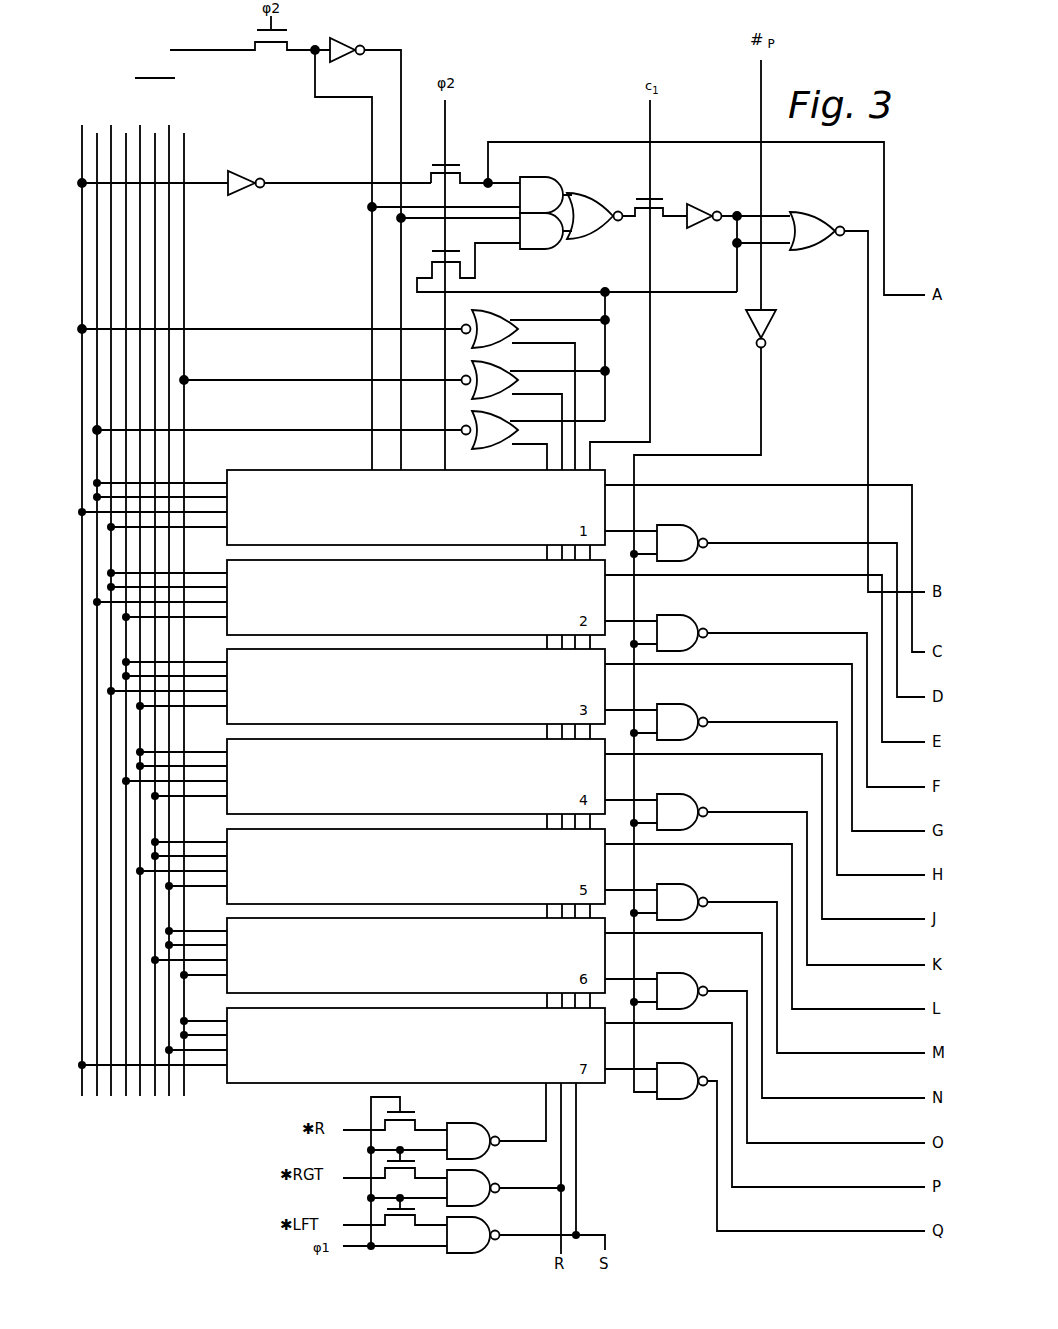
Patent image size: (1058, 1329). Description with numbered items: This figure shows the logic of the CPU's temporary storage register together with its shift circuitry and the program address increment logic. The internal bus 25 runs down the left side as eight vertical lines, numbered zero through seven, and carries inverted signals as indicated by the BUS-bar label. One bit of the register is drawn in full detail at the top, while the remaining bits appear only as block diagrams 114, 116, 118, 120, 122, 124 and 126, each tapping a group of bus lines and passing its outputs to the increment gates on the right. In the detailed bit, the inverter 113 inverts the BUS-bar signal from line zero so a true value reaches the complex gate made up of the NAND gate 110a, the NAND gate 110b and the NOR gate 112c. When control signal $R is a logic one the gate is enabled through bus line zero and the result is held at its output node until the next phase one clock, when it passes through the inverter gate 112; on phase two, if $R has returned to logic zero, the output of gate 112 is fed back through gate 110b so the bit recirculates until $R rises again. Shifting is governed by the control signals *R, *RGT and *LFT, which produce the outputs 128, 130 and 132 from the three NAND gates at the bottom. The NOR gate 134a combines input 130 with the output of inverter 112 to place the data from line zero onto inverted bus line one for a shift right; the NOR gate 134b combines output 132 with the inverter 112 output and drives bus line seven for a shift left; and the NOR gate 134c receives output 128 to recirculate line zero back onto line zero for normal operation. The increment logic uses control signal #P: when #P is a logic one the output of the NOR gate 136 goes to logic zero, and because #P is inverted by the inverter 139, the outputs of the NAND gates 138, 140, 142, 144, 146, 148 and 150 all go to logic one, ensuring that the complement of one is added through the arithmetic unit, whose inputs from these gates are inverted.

The internal bus 25 is at (233, 276).
The NAND gate 110a is at (531, 182).
The NAND gate 110b is at (546, 246).
The inverter gate 112 is at (697, 206).
The NOR gate 112c is at (580, 205).
The inverter 113 is at (243, 172).
The storage register bit 114 is at (290, 519).
The storage register bit 116 is at (290, 609).
The storage register bit 118 is at (290, 698).
The storage register bit 120 is at (290, 788).
The storage register bit 122 is at (290, 878).
The storage register bit 124 is at (290, 967).
The storage register bit 126 is at (290, 1057).
The output of *R gate 128 is at (482, 1138).
The control signal 130 is at (481, 1186).
The output of *LFT gate 132 is at (479, 1232).
The NOR gate 134a is at (491, 424).
The NOR gate 134b is at (500, 376).
The NOR gate 134c is at (500, 318).
The NOR gate 136 is at (805, 213).
The NAND gate 138 is at (682, 543).
The inverter 139 is at (769, 323).
The NAND gate 140 is at (682, 633).
The NAND gate 142 is at (682, 722).
The NAND gate 144 is at (682, 812).
The NAND gate 146 is at (682, 902).
The NAND gate 148 is at (682, 991).
The NAND gate 150 is at (682, 1081).